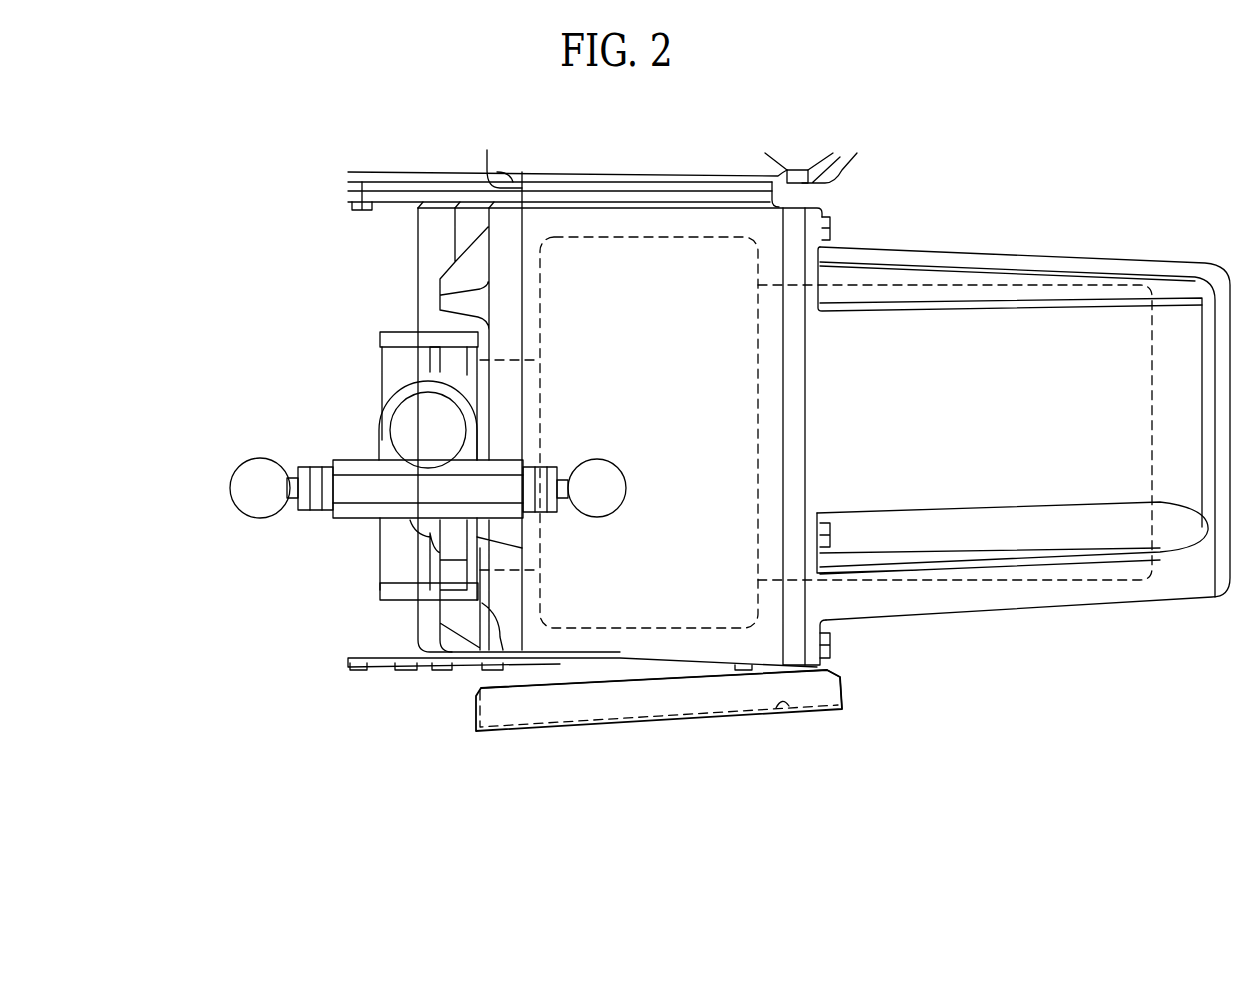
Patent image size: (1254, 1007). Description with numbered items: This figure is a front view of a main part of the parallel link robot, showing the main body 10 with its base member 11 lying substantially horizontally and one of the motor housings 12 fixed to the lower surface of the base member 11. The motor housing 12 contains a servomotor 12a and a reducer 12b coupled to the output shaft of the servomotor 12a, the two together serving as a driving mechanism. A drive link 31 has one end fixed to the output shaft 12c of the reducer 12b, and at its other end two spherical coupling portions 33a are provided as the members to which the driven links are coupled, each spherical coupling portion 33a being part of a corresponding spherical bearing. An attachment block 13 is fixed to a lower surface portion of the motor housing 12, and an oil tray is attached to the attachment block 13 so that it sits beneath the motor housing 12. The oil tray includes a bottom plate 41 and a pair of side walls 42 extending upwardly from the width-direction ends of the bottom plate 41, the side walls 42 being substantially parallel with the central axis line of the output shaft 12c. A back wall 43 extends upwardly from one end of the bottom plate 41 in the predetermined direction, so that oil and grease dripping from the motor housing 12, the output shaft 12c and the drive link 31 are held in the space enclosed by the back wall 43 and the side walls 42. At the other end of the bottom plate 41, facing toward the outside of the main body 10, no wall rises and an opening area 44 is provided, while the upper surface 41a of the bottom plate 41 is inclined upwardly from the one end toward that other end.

The main body 10 is at (324, 176).
The base member 11 is at (860, 172).
The motor housing 12 is at (1067, 608).
The servomotor 12a is at (975, 285).
The reducer 12b is at (660, 237).
The output shaft 12c is at (504, 360).
The attachment block 13 is at (675, 668).
The drive link 31 is at (392, 332).
The spherical coupling portion 33a is at (597, 458).
The bottom plate 41 is at (708, 715).
The upper surface 41a is at (789, 710).
The side wall 42 is at (602, 707).
The back wall 43 is at (473, 708).
The opening area 44 is at (840, 692).